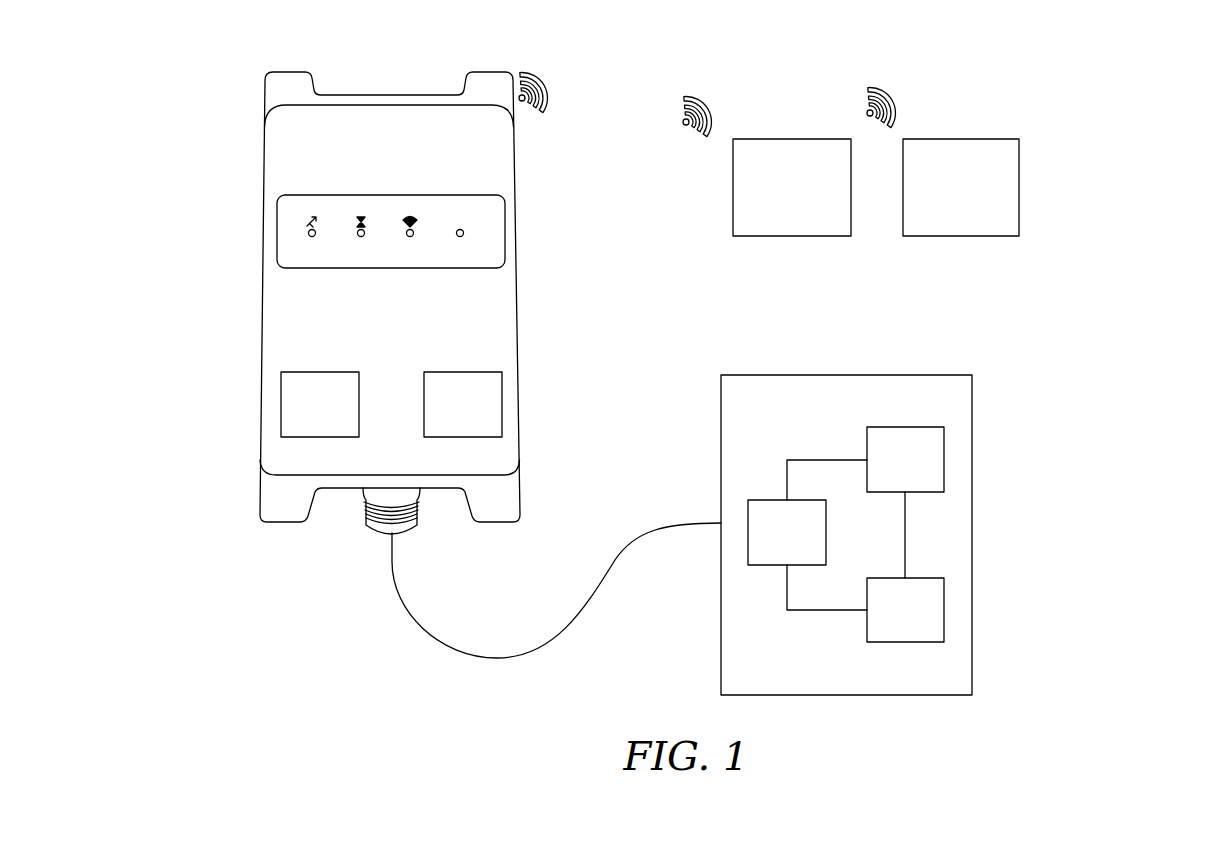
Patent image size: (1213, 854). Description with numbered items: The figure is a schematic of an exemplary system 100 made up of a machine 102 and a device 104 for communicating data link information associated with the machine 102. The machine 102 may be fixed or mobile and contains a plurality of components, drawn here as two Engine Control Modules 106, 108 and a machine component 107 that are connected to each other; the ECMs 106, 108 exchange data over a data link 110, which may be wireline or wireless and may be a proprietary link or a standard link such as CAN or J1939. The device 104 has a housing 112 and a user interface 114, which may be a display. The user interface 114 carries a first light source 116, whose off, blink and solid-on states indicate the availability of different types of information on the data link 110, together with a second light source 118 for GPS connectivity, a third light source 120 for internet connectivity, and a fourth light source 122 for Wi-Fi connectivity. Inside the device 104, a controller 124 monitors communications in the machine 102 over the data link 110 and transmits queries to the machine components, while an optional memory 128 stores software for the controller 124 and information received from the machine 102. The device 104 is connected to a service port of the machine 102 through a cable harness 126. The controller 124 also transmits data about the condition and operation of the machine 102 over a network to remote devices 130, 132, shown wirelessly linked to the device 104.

The system 100 is at (1119, 83).
The machine 102 is at (875, 375).
The device 104 is at (243, 120).
The Engine Control Module 106 is at (885, 472).
The machine component 107 is at (767, 545).
The Engine Control Module 108 is at (885, 622).
The data link 110 is at (905, 535).
The housing 112 is at (514, 187).
The user interface 114 is at (391, 195).
The first light source 116 is at (463, 233).
The second light source 118 is at (309, 233).
The third light source 120 is at (361, 237).
The fourth light source 122 is at (410, 237).
The controller 124 is at (300, 417).
The cable harness 126 is at (555, 642).
The memory 128 is at (443, 417).
The remote device 130 is at (772, 202).
The remote device 132 is at (941, 202).